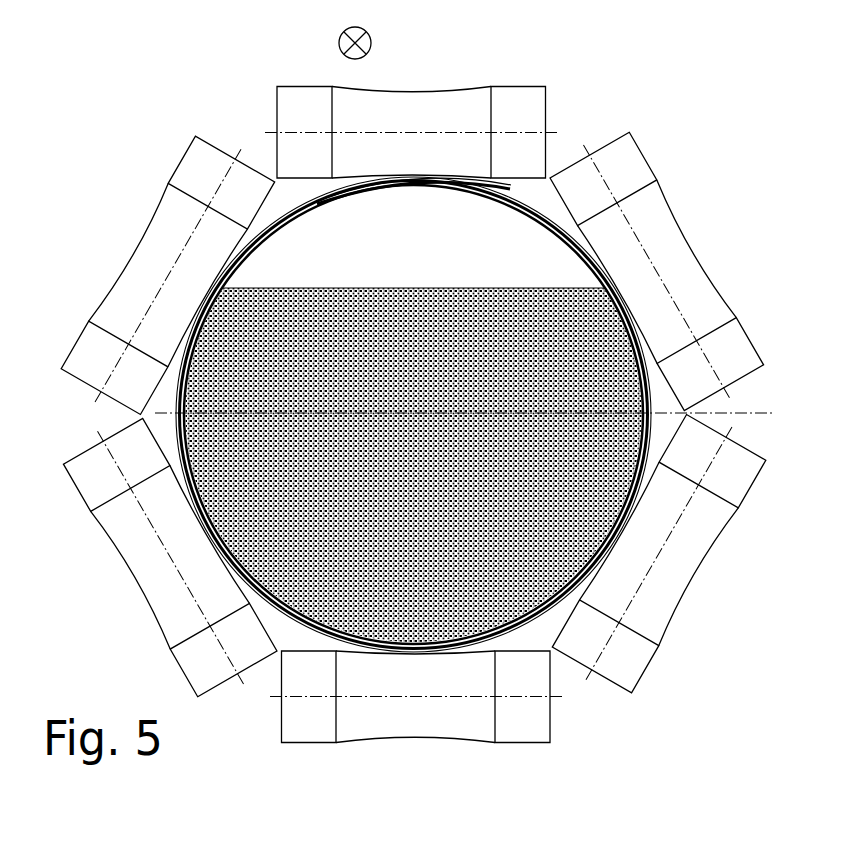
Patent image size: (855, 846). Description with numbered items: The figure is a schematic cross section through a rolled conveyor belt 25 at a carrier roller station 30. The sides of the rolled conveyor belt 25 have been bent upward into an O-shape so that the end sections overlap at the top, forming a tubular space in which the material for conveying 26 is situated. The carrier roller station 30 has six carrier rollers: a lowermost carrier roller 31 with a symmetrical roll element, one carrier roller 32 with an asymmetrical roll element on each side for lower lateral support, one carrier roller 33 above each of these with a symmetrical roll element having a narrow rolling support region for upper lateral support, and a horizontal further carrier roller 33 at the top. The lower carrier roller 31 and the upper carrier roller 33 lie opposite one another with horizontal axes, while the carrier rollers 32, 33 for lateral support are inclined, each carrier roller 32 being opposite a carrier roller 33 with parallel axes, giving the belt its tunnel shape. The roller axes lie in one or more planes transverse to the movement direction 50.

The carrier roller station 30 is at (245, 105).
The movement direction 50 is at (330, 48).
The rolled conveyor belt 25 is at (528, 200).
The material for conveying 26 is at (493, 585).
The carrier roller 33 is at (430, 100).
The carrier roller 32 is at (150, 560).
The lowermost carrier roller 31 is at (387, 723).